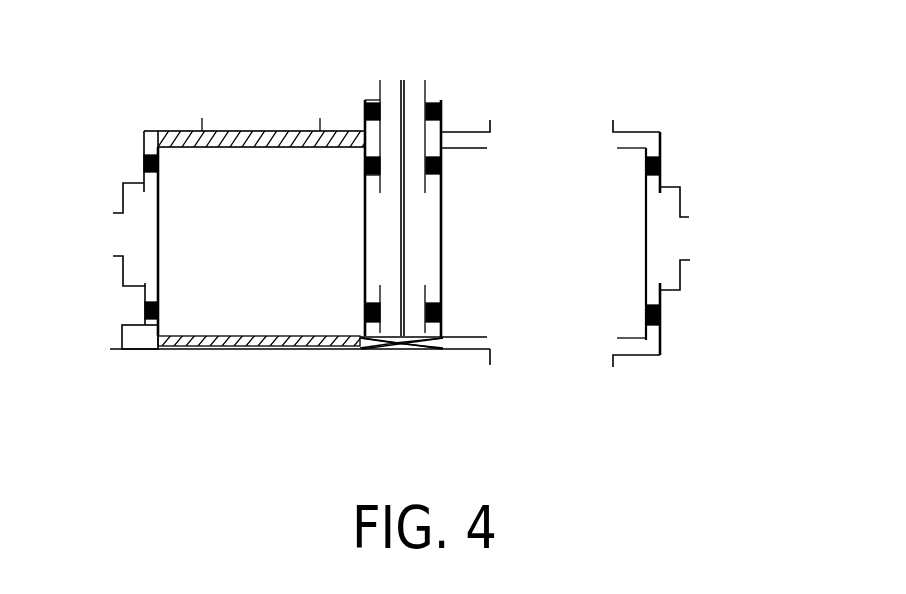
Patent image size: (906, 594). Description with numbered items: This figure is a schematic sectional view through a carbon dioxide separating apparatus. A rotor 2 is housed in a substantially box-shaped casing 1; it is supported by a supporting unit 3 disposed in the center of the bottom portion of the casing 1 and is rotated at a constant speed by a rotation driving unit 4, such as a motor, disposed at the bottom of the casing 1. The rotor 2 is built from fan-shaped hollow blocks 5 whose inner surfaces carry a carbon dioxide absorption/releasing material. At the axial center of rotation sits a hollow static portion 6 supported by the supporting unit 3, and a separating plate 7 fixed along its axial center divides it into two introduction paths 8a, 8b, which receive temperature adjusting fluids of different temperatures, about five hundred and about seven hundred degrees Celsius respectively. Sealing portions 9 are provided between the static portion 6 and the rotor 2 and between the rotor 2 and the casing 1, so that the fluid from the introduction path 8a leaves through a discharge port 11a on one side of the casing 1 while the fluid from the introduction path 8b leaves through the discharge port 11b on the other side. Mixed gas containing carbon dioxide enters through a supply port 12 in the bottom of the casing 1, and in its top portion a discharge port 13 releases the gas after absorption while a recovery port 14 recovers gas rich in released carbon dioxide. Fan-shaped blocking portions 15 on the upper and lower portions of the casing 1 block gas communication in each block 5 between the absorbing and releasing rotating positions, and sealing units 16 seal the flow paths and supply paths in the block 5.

The casing 1 is at (655, 132).
The rotor 2 is at (580, 300).
The supporting unit 3 is at (400, 353).
The rotation driving unit 4 is at (137, 345).
The hollow block 5 is at (252, 315).
The hollow static portion 6 is at (428, 82).
The separating plate 7 is at (402, 82).
The introduction path 8a is at (413, 328).
The introduction path 8b is at (390, 328).
The sealing portion 9 is at (363, 108).
The discharge port 11a is at (689, 210).
The discharge port 11b is at (113, 213).
The supply port 12 is at (542, 363).
The discharge port 13 is at (583, 130).
The recovery port 14 is at (255, 125).
The blocking portion 15 is at (227, 138).
The sealing unit 16 is at (145, 310).